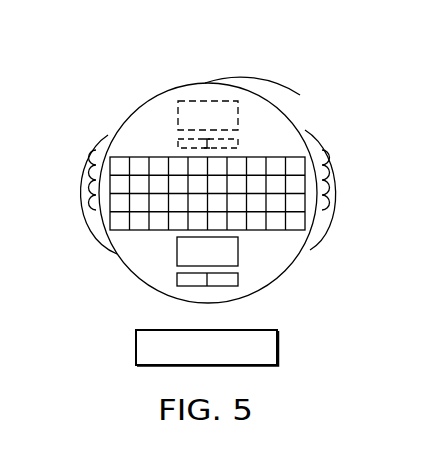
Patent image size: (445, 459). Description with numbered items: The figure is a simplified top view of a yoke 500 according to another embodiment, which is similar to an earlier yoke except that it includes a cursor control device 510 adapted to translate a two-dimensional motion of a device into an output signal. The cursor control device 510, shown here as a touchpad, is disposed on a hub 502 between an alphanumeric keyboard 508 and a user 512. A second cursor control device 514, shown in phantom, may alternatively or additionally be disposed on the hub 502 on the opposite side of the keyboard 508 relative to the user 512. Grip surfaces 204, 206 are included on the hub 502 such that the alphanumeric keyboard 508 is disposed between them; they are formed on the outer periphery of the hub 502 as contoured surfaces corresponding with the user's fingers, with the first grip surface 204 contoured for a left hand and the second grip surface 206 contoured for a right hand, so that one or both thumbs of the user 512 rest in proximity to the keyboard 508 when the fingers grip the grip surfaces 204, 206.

The yoke 500 is at (242, 164).
The hub 502 is at (283, 108).
The first grip surface 204 is at (84, 170).
The second grip surface 206 is at (338, 168).
The cursor control device 514 is at (159, 101).
The alphanumeric keyboard 508 is at (235, 222).
The cursor control device 510 is at (257, 278).
The user 512 is at (278, 345).